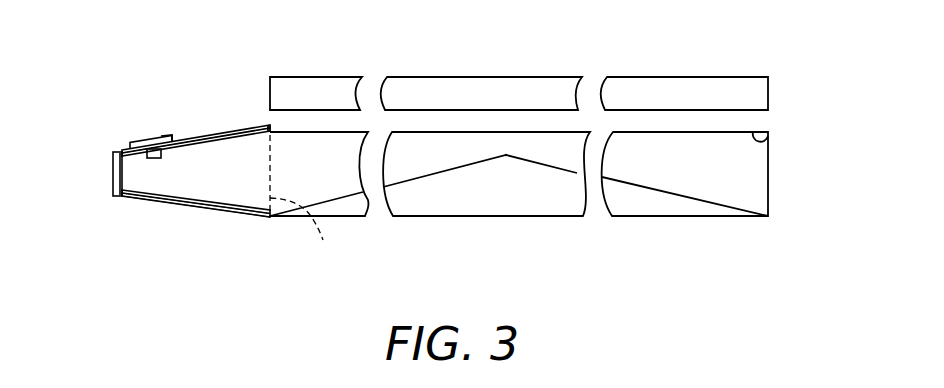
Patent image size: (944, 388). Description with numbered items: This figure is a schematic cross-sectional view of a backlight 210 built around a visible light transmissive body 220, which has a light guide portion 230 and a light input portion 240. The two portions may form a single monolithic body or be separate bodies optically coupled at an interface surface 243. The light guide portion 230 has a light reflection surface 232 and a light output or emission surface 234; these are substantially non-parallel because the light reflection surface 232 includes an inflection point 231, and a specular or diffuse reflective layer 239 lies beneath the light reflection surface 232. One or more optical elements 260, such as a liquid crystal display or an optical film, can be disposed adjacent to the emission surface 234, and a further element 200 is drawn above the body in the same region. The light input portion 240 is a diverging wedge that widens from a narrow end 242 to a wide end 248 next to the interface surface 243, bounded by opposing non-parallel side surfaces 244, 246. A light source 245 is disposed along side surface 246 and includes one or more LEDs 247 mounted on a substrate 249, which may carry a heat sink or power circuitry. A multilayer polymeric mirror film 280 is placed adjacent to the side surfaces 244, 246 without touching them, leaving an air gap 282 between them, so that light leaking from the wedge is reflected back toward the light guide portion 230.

The upper plate 200 is at (313, 88).
The backlight 210 is at (502, 50).
The visible light transmissive body 220 is at (620, 187).
The light guide portion 230 is at (707, 180).
The inflection point 231 is at (507, 156).
The light reflection surface 232 is at (560, 168).
The emission surface 234 is at (770, 138).
The reflective layer 239 is at (407, 218).
The light input portion 240 is at (140, 142).
The narrow end 242 is at (113, 177).
The interface surface 243 is at (310, 234).
The side surface 244 is at (233, 207).
The light source 245 is at (190, 160).
The side surface 246 is at (219, 152).
The LED 247 is at (153, 158).
The wide end 248 is at (271, 148).
The substrate 249 is at (167, 138).
The optical element 260 is at (697, 86).
The multilayer polymeric mirror film 280 is at (160, 205).
The air gap 282 is at (195, 141).